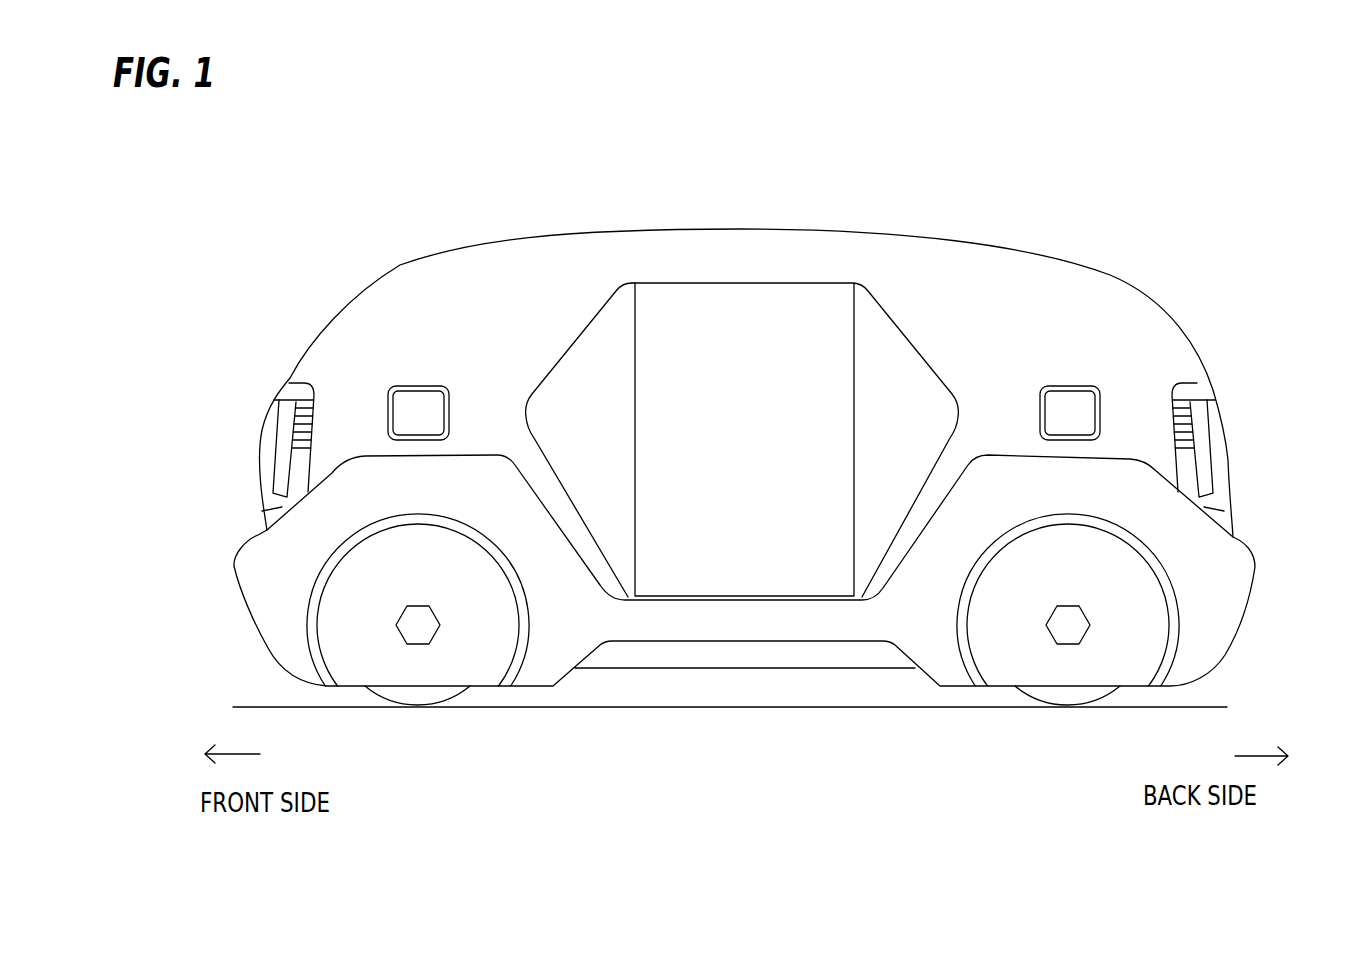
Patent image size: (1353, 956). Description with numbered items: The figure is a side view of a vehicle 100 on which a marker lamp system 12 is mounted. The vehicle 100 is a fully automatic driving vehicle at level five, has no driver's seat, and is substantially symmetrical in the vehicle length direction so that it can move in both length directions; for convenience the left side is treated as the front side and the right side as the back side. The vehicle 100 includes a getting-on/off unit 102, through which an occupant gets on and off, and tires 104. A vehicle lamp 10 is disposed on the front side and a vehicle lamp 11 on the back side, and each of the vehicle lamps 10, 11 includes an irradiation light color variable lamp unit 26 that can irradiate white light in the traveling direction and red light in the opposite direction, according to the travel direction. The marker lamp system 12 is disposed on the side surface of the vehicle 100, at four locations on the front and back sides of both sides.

The vehicle 100 is at (418, 246).
The getting-on/off unit 102 is at (736, 290).
The marker lamp system 12 is at (440, 380).
The vehicle lamp 10 is at (257, 397).
The vehicle lamp 11 is at (1232, 403).
The irradiation light color variable lamp unit 26 is at (298, 399).
The tire 104 is at (420, 695).